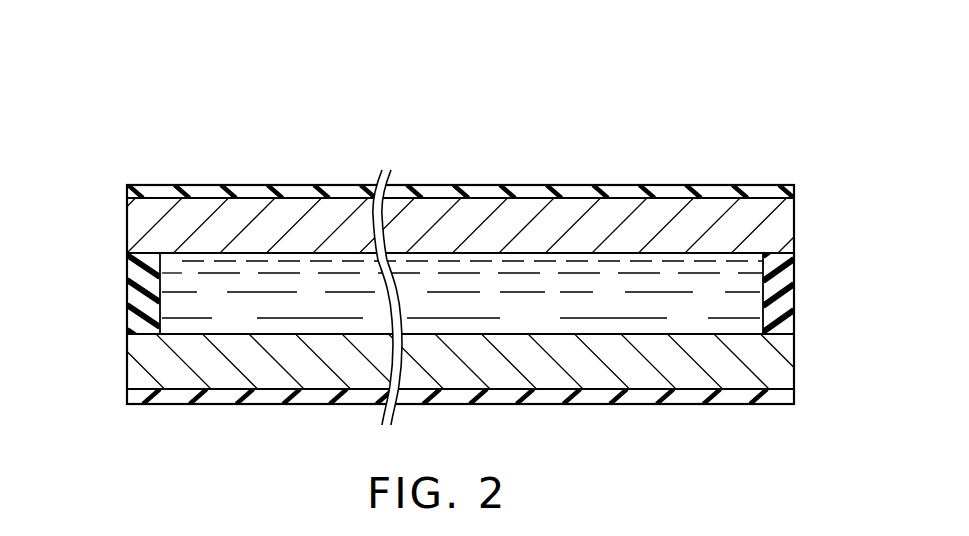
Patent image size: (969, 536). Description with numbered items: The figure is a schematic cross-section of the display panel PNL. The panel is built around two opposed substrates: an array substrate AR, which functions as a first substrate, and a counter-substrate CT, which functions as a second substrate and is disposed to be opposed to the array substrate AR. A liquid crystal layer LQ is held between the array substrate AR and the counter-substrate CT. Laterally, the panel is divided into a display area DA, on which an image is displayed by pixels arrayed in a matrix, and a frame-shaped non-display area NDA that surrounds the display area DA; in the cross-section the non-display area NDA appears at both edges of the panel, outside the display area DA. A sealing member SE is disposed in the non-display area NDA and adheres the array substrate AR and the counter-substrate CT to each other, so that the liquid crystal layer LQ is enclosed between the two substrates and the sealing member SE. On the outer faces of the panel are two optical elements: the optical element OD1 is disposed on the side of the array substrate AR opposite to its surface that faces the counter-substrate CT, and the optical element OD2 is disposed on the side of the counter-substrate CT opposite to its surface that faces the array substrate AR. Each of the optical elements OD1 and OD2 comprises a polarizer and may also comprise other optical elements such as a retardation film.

The display panel PNL is at (141, 66).
The non-display area NDA is at (160, 253).
The display area DA is at (763, 131).
The counter-substrate CT is at (115, 231).
The array substrate AR is at (115, 371).
The sealing member SE is at (138, 298).
The liquid crystal layer LQ is at (231, 317).
The optical element OD1 is at (777, 399).
The optical element OD2 is at (777, 197).